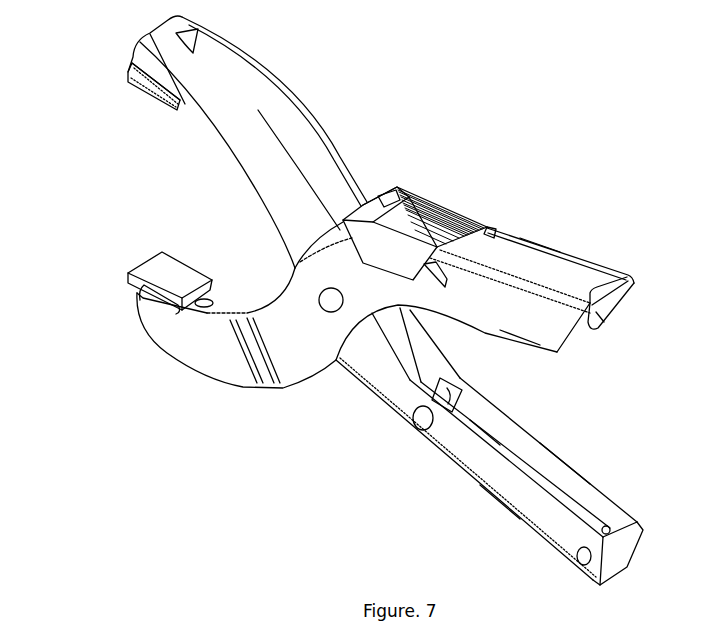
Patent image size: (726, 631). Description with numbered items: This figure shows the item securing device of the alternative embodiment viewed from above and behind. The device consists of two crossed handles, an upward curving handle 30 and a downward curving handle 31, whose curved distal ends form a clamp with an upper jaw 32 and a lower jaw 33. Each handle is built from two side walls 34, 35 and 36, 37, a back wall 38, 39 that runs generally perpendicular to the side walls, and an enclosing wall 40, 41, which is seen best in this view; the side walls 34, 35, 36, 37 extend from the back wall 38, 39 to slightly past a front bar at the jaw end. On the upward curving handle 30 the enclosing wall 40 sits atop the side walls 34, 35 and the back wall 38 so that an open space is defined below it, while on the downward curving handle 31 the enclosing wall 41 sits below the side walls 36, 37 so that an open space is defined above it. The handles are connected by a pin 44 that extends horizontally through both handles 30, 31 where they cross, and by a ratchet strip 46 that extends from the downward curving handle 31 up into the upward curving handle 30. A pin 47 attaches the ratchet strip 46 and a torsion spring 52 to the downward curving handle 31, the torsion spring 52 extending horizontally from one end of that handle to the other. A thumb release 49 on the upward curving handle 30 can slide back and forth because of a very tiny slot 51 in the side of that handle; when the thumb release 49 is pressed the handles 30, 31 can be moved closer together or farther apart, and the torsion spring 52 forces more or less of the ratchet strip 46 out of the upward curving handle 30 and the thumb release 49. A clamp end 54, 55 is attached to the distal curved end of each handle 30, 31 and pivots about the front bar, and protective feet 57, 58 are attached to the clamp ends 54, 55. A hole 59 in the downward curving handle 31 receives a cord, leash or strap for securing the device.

The upward curving handle 30 is at (613, 270).
The downward curving handle 31 is at (447, 468).
The upper jaw 32 is at (293, 88).
The lower jaw 33 is at (218, 390).
The side wall 34 is at (530, 327).
The side wall 35 is at (597, 313).
The side wall 36 is at (490, 468).
The side wall 37 is at (568, 492).
The back wall 38 is at (633, 279).
The back wall 39 is at (615, 548).
The enclosing wall 40 is at (543, 240).
The enclosing wall 41 is at (502, 513).
The pin 44 is at (333, 318).
The ratchet strip 46 is at (443, 362).
The pin 47 is at (417, 433).
The thumb release 49 is at (453, 202).
The slot 51 is at (447, 285).
The torsion spring 52 is at (458, 393).
The clamp end 54 is at (128, 72).
The clamp end 55 is at (126, 260).
The protective foot 57 is at (148, 108).
The protective foot 58 is at (178, 268).
The hole 59 is at (583, 571).